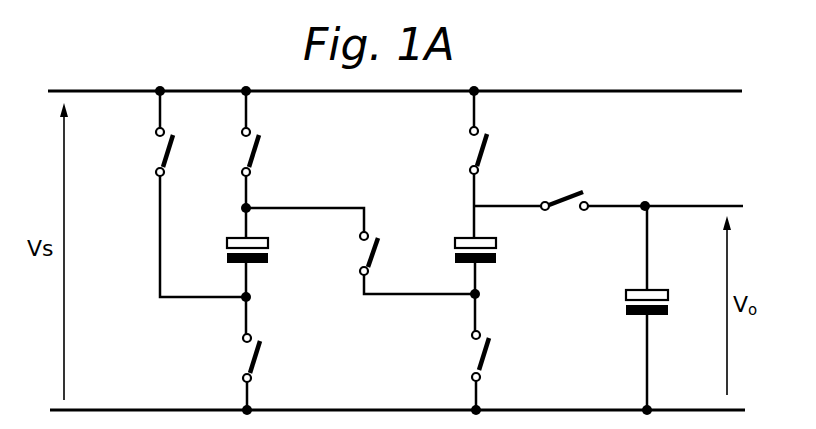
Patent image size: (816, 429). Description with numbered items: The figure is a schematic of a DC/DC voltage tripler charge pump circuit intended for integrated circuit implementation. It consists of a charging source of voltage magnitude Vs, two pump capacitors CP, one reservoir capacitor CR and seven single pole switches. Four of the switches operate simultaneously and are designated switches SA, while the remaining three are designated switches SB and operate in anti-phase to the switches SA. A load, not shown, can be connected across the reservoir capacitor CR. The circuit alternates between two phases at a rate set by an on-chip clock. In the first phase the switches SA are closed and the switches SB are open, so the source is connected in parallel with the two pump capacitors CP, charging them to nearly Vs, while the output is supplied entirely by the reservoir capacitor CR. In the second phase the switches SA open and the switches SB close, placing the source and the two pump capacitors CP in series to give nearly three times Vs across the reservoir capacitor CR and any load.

The switches SA is at (257, 155).
The switches SB is at (171, 155).
The pump capacitors CP is at (256, 263).
The reservoir capacitor CR is at (636, 315).